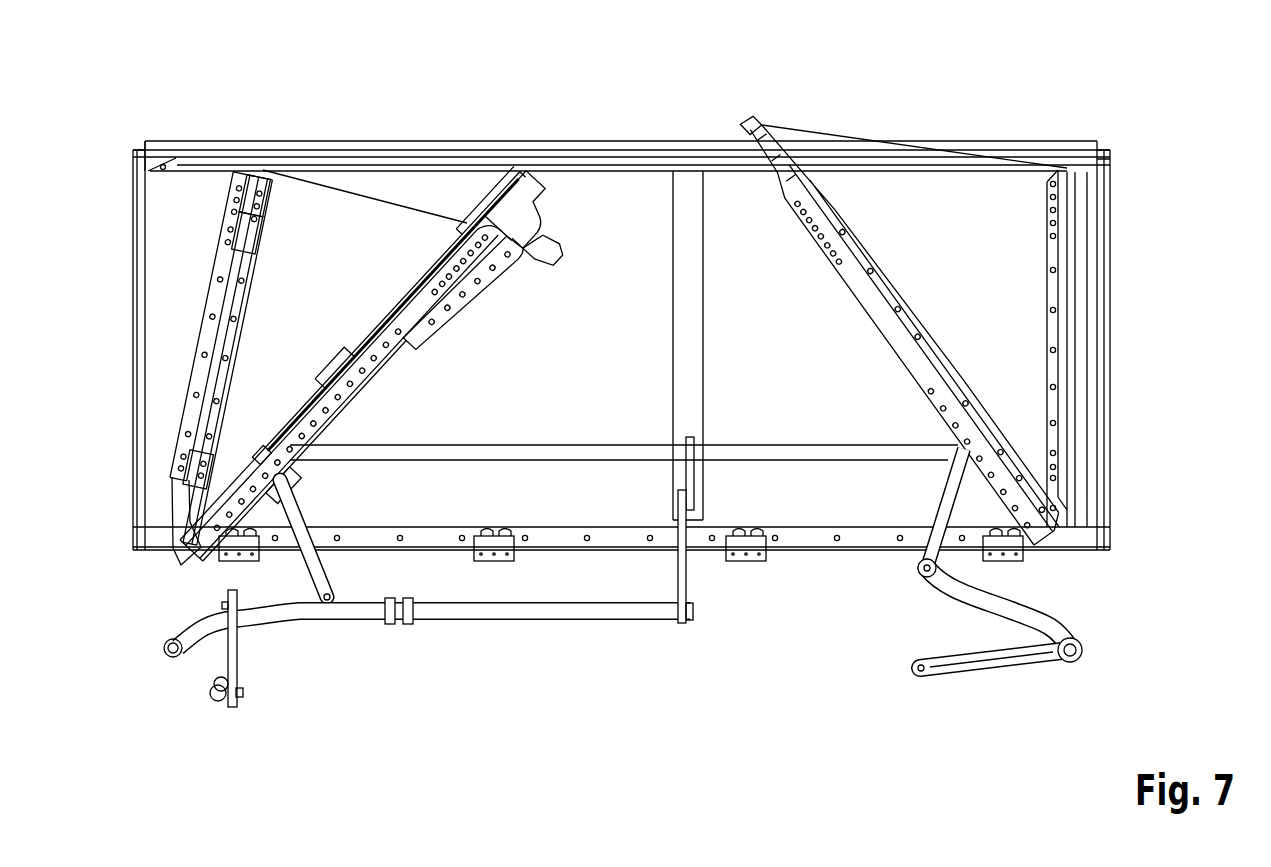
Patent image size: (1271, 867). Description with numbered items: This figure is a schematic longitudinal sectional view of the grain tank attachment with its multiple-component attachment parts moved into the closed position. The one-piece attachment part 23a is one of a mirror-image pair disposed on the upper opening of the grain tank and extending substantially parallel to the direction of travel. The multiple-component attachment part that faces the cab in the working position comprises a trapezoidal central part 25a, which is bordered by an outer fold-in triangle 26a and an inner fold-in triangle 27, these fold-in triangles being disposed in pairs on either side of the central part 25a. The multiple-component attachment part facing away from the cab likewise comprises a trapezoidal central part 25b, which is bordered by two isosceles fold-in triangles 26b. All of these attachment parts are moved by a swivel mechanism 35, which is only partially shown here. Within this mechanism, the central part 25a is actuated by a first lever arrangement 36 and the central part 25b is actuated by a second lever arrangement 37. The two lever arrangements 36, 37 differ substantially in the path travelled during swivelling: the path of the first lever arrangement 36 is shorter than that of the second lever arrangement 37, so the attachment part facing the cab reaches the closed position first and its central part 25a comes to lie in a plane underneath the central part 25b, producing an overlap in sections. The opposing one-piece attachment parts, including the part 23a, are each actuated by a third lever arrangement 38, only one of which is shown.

The one-piece attachment part 23a is at (622, 315).
The trapezoidal central part 25a is at (437, 270).
The trapezoidal central part 25b is at (795, 195).
The outer fold-in triangle 26a is at (325, 230).
The isosceles fold-in triangle 26b is at (915, 225).
The inner fold-in triangle 27 is at (527, 215).
The swivel mechanism 35 is at (195, 735).
The first lever arrangement 36 is at (322, 632).
The second lever arrangement 37 is at (922, 604).
The third lever arrangement 38 is at (553, 630).